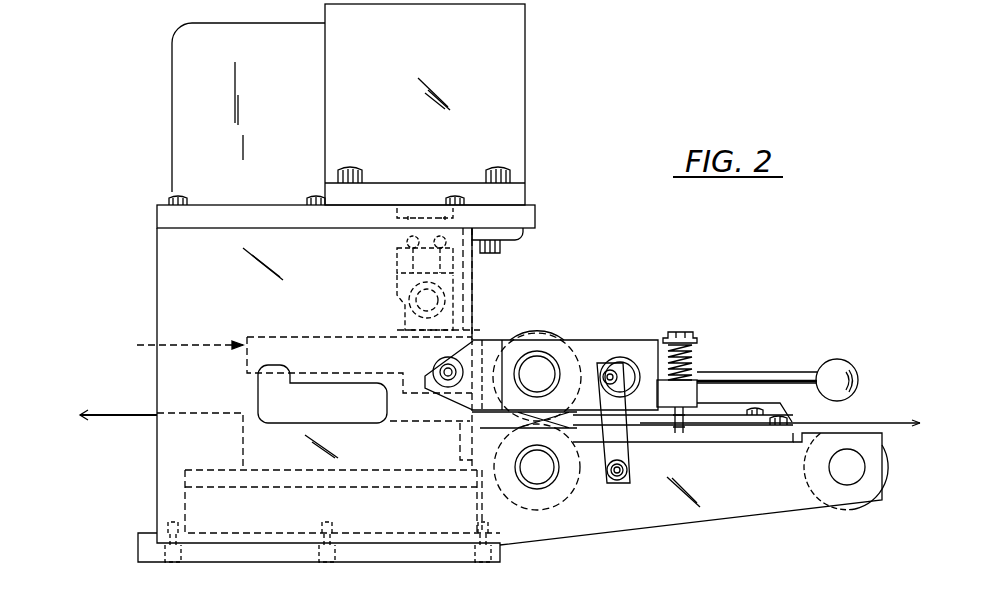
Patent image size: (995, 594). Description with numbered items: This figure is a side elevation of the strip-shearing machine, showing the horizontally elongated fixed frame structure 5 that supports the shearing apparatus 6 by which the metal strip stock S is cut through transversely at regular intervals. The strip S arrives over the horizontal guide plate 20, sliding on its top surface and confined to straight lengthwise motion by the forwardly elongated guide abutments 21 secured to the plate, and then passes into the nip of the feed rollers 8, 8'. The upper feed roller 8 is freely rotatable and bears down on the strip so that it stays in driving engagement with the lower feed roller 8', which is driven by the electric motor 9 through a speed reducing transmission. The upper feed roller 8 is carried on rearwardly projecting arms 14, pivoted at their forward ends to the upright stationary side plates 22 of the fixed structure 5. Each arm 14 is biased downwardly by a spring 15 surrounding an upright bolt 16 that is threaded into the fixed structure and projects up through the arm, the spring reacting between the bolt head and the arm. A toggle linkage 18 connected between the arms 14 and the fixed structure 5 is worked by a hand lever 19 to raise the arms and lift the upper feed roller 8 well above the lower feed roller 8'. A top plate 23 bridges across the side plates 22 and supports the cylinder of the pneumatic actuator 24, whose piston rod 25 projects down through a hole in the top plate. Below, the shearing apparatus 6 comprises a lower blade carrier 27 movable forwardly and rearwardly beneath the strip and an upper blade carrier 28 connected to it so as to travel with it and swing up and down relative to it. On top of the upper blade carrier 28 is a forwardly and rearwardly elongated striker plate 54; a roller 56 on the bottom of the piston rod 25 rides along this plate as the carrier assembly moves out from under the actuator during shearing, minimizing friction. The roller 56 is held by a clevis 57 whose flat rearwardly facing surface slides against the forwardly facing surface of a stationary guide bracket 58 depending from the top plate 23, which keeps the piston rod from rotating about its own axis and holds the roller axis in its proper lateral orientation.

The fixed frame structure 5 is at (150, 275).
The shearing apparatus 6 is at (180, 344).
The upper feed roller 8 is at (537, 352).
The lower feed roller 8' is at (537, 499).
The electric motor 9 is at (182, 115).
The arms 14 is at (600, 340).
The spring 15 is at (692, 360).
The upright bolt 16 is at (692, 336).
The toggle linkage 18 is at (623, 455).
The hand lever 19 is at (770, 372).
The horizontal guide plate 20 is at (795, 421).
The guide abutments 21 is at (780, 402).
The side plates 22 is at (632, 525).
The top plate 23 is at (162, 211).
The pneumatic actuator 24 is at (525, 105).
The piston rod 25 is at (405, 238).
The lower blade carrier 27 is at (243, 441).
The upper blade carrier 28 is at (283, 337).
The striker plate 54 is at (470, 322).
The roller 56 is at (410, 306).
The clevis 57 is at (397, 283).
The stationary guide bracket 58 is at (465, 262).
The metal strip stock S is at (120, 418).